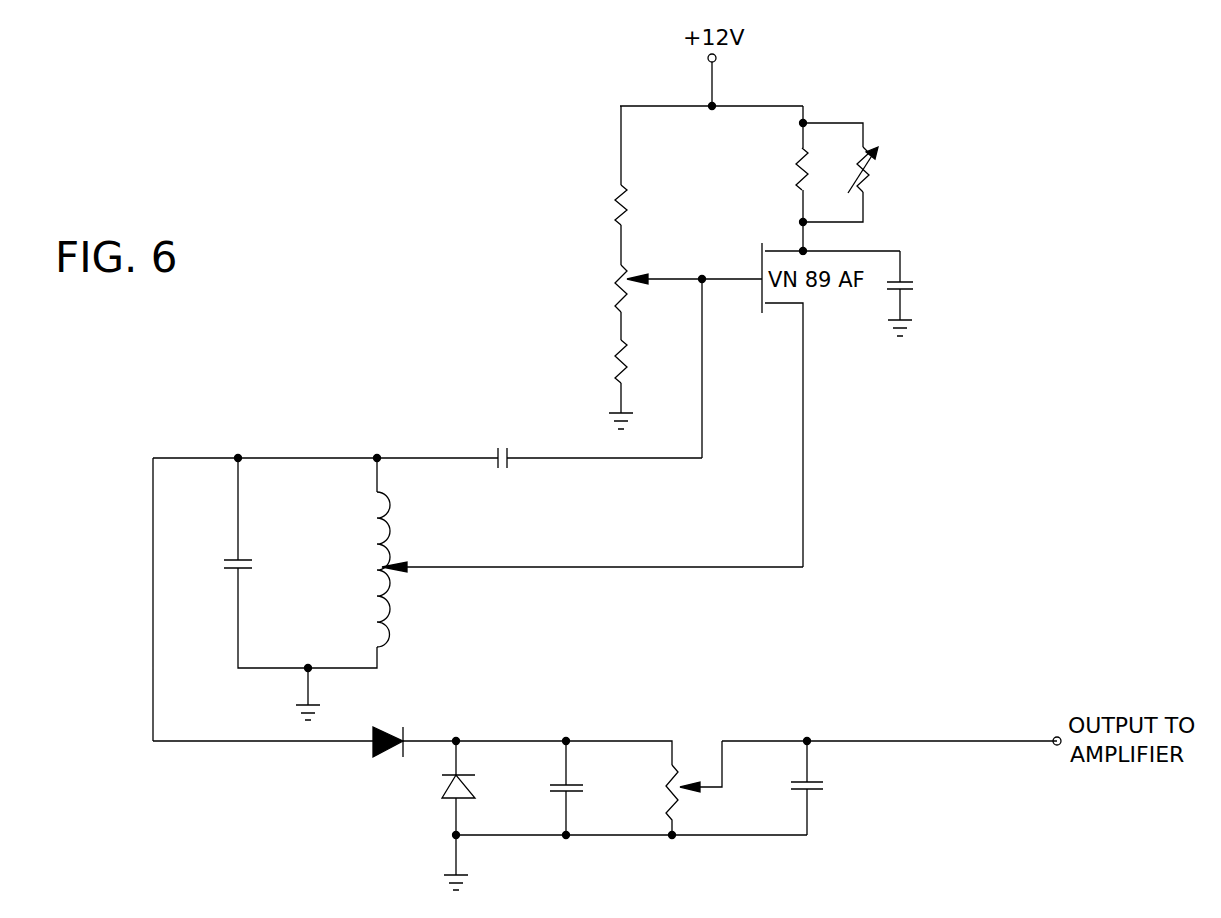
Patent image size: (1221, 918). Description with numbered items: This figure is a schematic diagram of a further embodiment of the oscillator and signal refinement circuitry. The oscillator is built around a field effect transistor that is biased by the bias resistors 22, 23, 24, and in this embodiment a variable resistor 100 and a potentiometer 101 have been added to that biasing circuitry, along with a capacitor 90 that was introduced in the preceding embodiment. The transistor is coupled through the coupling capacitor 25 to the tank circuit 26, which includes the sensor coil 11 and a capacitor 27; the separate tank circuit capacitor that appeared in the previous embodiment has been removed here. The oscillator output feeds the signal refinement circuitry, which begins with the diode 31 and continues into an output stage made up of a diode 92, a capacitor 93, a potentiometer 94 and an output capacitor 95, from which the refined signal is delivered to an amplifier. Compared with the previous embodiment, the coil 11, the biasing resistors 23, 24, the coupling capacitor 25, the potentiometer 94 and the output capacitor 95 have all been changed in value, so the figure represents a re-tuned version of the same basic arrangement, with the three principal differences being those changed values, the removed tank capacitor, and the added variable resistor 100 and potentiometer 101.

The sensor coil 11 is at (391, 525).
The bias resistor 22 is at (800, 156).
The bias resistor 23 is at (615, 205).
The bias resistor 24 is at (616, 358).
The coupling capacitor 25 is at (510, 466).
The tank circuit 26 is at (312, 440).
The capacitor 27 is at (234, 558).
The diode 31 is at (386, 727).
The capacitor 90 is at (890, 292).
The diode 92 is at (447, 796).
The capacitor 93 is at (570, 845).
The potentiometer 94 is at (672, 845).
The output capacitor 95 is at (810, 845).
The variable resistor 100 is at (870, 188).
The potentiometer 101 is at (616, 279).